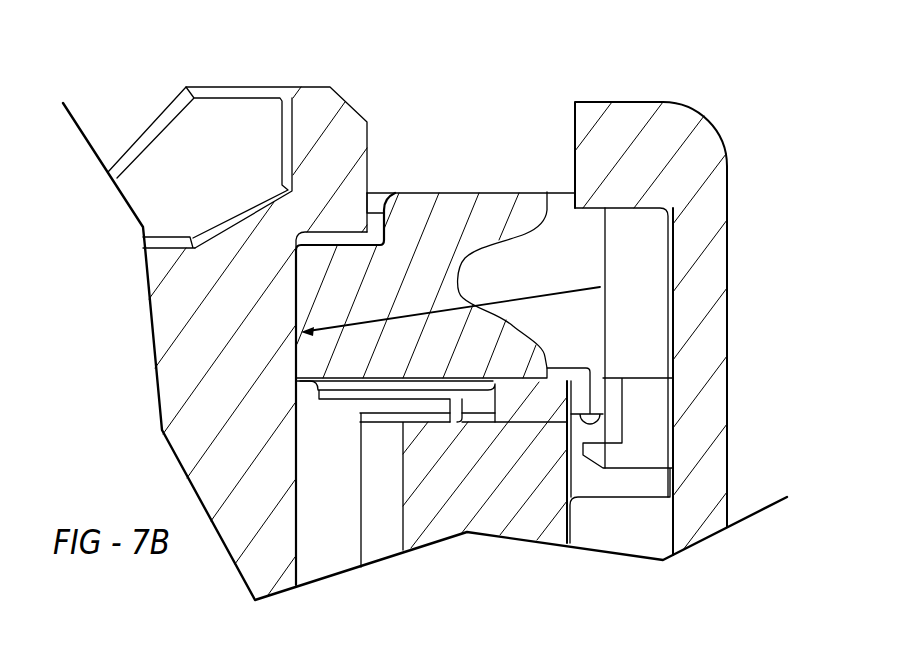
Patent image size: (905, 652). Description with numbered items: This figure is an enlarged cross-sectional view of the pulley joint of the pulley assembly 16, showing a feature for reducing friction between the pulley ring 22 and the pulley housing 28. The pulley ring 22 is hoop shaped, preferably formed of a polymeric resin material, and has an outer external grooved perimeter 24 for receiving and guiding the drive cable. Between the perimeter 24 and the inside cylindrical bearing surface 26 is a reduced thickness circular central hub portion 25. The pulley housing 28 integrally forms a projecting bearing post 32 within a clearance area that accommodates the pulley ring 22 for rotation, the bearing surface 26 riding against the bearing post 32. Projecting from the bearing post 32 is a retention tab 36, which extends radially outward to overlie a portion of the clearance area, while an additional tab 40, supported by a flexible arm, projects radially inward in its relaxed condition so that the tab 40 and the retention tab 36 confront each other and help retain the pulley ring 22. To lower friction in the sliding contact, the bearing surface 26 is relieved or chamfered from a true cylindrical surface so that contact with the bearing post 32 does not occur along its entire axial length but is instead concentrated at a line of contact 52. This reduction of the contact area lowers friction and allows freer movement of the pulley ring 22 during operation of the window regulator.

The pulley assembly 16 is at (427, 112).
The pulley ring 22 is at (513, 193).
The outer external grooved perimeter 24 is at (515, 232).
The reduced thickness circular central hub portion 25 is at (342, 247).
The inside cylindrical bearing surface 26 is at (297, 363).
The pulley housing 28 is at (698, 113).
The bearing post 32 is at (296, 500).
The retention tab 36 is at (367, 140).
The tab 40 is at (632, 102).
The line of contact 52 is at (295, 267).